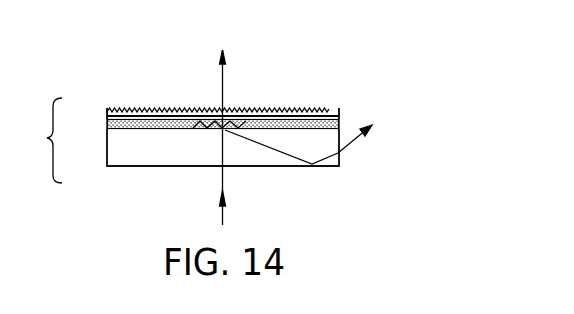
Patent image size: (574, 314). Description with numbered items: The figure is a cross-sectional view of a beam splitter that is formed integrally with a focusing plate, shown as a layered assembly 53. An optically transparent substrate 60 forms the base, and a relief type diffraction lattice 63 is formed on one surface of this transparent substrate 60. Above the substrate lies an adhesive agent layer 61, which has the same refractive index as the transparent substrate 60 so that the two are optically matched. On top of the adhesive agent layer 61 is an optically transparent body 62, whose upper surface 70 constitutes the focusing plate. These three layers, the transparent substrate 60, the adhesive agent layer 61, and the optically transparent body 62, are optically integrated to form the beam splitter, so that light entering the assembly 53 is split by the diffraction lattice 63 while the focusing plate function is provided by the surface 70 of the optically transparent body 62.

The light guide plate assembly 53 is at (176, 140).
The optically transparent substrate 60 is at (112, 155).
The adhesive agent layer 61 is at (107, 124).
The optically transparent body 62 is at (107, 116).
The relief type diffraction lattice 63 is at (233, 122).
The serrated top surface 70 is at (293, 108).